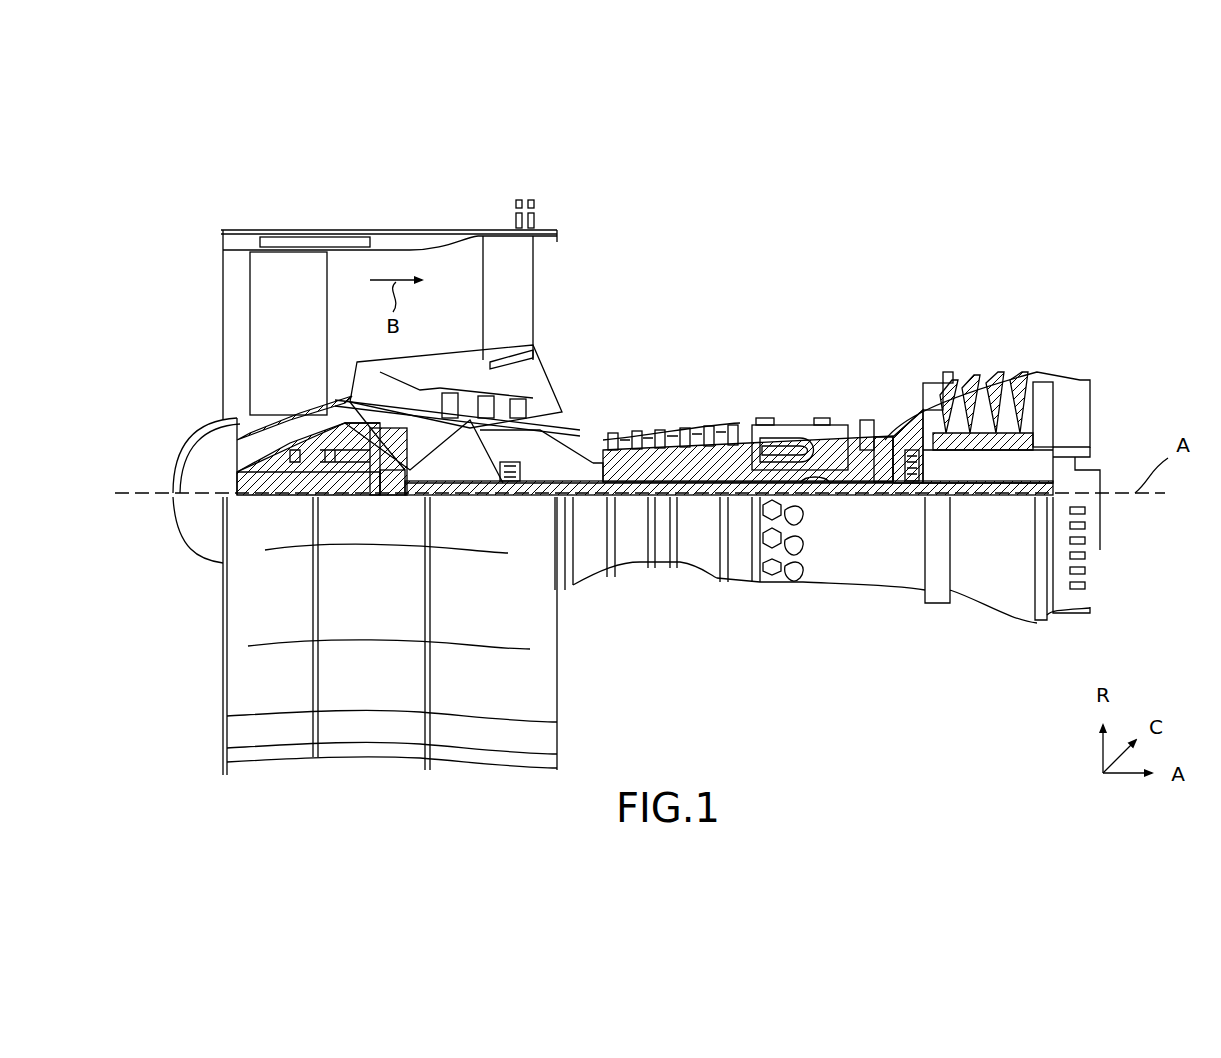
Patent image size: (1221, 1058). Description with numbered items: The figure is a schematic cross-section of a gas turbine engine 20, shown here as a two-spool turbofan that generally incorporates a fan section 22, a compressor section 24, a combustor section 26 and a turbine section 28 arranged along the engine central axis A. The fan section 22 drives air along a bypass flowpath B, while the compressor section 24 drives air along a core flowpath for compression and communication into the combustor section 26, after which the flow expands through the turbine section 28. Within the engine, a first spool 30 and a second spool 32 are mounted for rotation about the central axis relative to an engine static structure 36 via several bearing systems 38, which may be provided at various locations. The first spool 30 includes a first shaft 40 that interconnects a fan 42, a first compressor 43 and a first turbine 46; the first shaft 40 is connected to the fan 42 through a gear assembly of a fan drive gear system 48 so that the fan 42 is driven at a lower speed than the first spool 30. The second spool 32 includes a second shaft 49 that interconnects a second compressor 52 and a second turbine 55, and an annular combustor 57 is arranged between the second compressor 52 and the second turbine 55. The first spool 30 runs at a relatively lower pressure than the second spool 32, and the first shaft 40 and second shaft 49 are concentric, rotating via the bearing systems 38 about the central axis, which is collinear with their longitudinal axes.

The gas turbine engine 20 is at (822, 272).
The fan section 22 is at (321, 214).
The compressor section 24 is at (743, 407).
The combustor section 26 is at (838, 390).
The turbine section 28 is at (992, 396).
The first spool 30 is at (696, 512).
The second spool 32 is at (740, 462).
The engine static structure 36 is at (738, 582).
The bearing systems 38 is at (514, 483).
The first shaft 40 is at (578, 500).
The fan 42 is at (272, 346).
The first compressor 43 is at (500, 398).
The first turbine 46 is at (988, 385).
The fan drive gear system 48 is at (390, 482).
The second shaft 49 is at (818, 492).
The second compressor 52 is at (673, 460).
The second turbine 55 is at (866, 420).
The annular combustor 57 is at (802, 436).